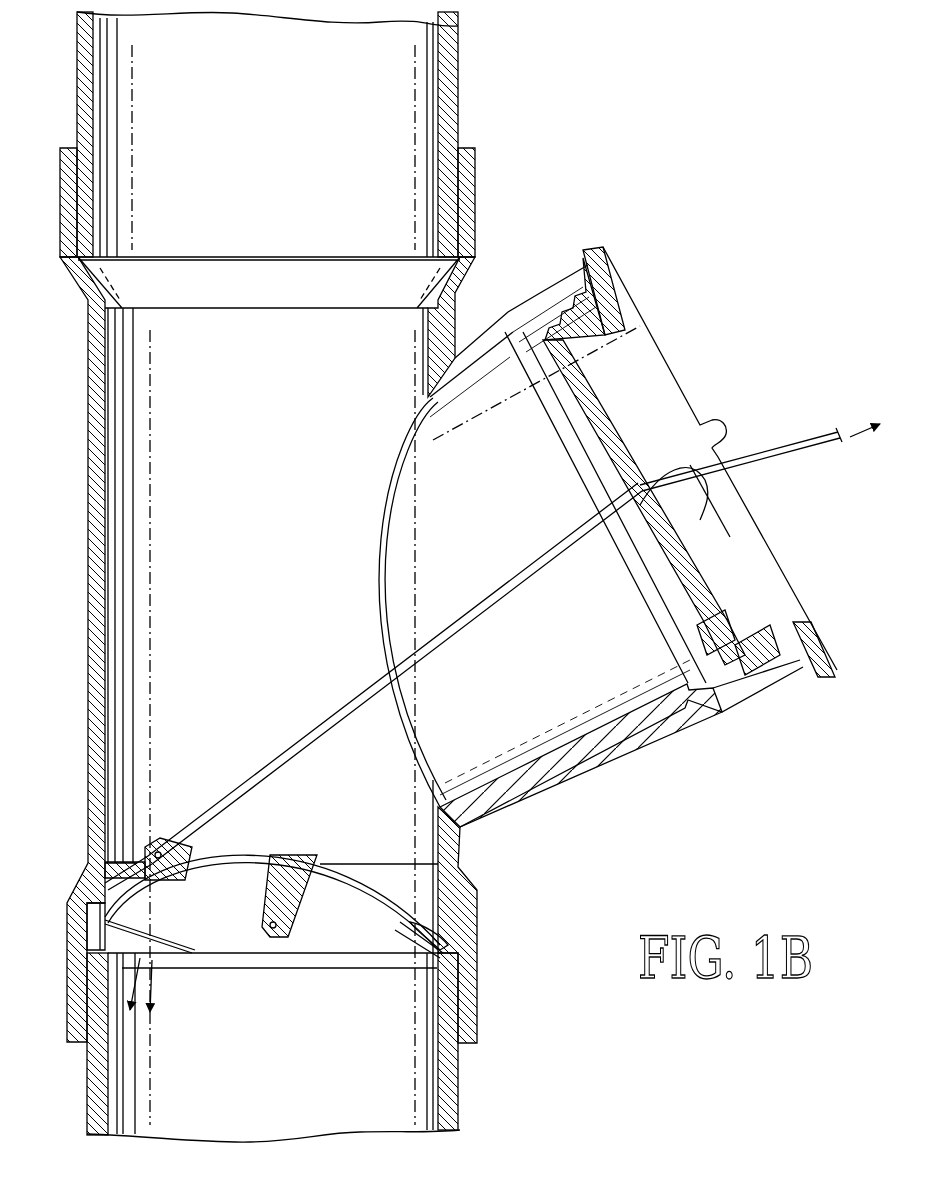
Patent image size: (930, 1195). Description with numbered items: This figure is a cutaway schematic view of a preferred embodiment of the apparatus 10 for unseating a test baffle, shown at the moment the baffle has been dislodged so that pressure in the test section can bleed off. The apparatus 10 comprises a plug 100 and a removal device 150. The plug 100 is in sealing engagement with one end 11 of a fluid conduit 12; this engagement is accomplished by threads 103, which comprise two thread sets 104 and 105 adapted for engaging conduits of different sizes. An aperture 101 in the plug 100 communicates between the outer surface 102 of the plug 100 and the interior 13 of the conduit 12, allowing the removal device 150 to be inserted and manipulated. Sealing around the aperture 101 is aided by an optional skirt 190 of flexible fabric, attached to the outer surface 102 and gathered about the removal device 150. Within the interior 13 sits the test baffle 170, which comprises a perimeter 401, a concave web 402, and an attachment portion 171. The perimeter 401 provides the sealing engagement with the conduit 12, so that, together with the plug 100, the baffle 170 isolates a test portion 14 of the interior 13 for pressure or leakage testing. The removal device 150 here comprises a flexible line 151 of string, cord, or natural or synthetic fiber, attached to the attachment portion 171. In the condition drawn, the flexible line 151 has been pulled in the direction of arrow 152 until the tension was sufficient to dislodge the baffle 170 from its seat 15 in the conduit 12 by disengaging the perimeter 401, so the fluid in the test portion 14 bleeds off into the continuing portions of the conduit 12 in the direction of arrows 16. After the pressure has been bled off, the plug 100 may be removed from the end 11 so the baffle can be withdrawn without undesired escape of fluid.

The apparatus 10 is at (70, 525).
The end 11 is at (58, 168).
The fluid conduit 12 is at (88, 380).
The interior 13 is at (366, 781).
The test portion 14 is at (284, 508).
The seat 15 is at (85, 948).
The arrows 16 is at (150, 985).
The plug 100 is at (625, 330).
The aperture 101 is at (642, 470).
The outer surface 102 is at (745, 582).
The threads 103 is at (575, 295).
The thread set 104 is at (738, 692).
The thread set 105 is at (800, 672).
The removal device 150 is at (790, 440).
The flexible line 151 is at (432, 648).
The pull direction 152 is at (855, 428).
The test baffle 170 is at (190, 838).
The attachment portion 171 is at (297, 920).
The skirt 190 is at (705, 490).
The perimeter 401 is at (108, 930).
The web 402 is at (240, 850).